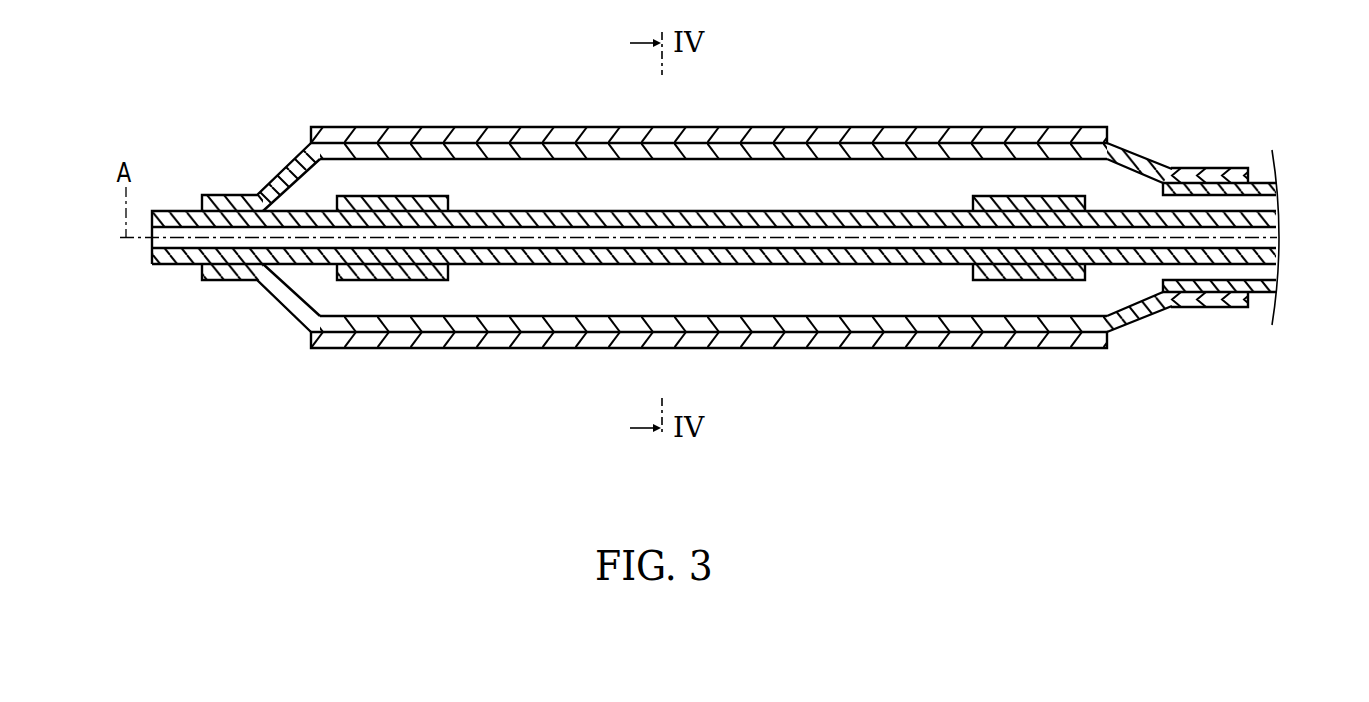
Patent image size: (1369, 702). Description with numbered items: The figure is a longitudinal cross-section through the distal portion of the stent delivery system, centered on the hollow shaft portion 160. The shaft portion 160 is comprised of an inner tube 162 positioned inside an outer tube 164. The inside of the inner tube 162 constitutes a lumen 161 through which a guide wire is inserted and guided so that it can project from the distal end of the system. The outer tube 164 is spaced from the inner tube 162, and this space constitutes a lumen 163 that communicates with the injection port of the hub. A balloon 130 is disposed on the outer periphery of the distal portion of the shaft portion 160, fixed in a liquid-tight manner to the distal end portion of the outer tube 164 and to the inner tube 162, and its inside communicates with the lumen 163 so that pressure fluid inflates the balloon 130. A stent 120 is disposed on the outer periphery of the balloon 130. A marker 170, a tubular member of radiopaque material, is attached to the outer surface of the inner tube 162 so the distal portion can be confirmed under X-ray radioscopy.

The stent 120 is at (915, 127).
The balloon 130 is at (1133, 152).
The shaft portion 160 is at (1223, 292).
The lumen 161 is at (165, 242).
The inner tube 162 is at (1150, 258).
The lumen 163 is at (1262, 203).
The outer tube 164 is at (1220, 332).
The marker 170 is at (415, 281).